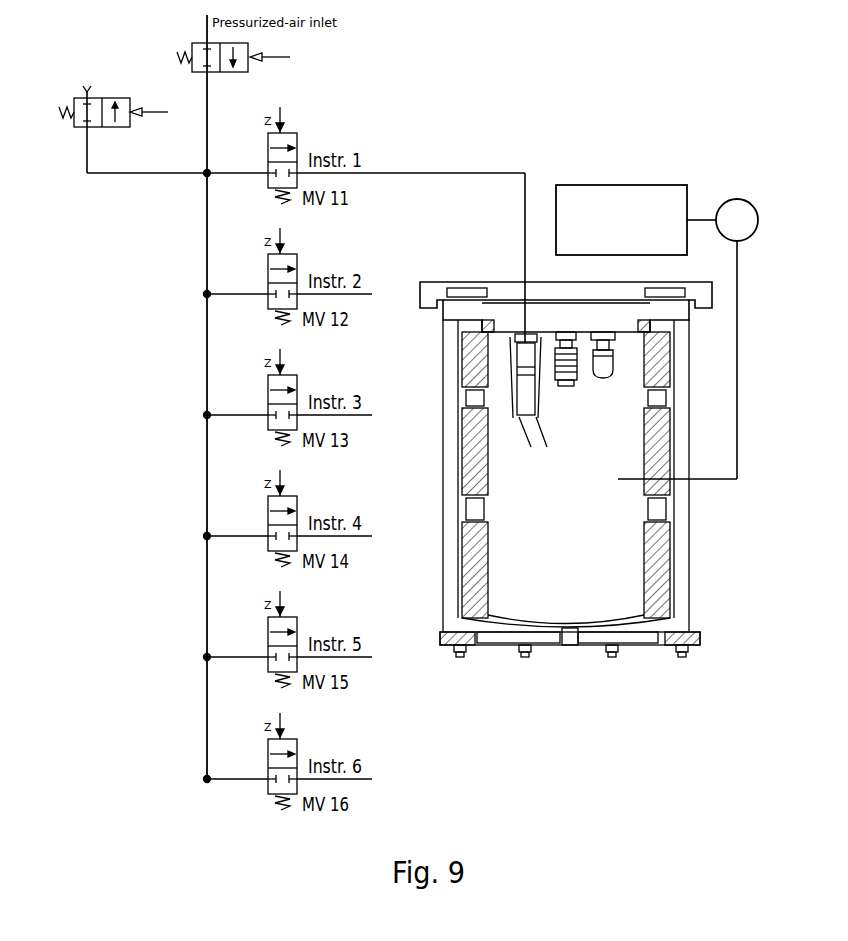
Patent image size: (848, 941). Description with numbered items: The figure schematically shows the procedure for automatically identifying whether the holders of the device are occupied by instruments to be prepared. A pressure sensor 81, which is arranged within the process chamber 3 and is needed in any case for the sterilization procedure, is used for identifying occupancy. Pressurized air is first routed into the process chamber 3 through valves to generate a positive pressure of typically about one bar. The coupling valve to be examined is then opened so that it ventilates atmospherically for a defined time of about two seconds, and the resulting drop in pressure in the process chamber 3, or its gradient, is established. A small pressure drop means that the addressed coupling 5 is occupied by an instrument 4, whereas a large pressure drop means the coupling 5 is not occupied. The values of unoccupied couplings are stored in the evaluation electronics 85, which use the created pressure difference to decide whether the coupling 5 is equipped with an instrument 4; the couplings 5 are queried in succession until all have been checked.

The process chamber 3 is at (570, 582).
The instrument 4 is at (510, 383).
The coupling 5 is at (613, 358).
The pressure sensor 81 is at (737, 199).
The evaluation electronics 85 is at (622, 185).